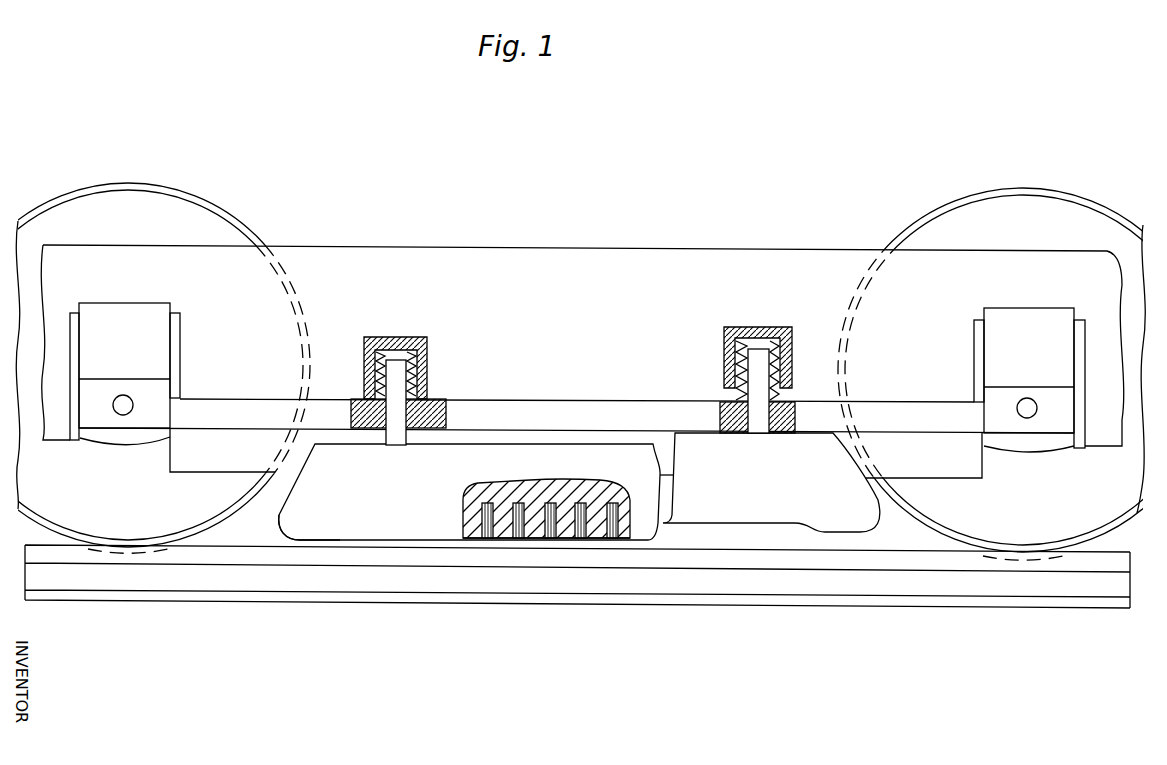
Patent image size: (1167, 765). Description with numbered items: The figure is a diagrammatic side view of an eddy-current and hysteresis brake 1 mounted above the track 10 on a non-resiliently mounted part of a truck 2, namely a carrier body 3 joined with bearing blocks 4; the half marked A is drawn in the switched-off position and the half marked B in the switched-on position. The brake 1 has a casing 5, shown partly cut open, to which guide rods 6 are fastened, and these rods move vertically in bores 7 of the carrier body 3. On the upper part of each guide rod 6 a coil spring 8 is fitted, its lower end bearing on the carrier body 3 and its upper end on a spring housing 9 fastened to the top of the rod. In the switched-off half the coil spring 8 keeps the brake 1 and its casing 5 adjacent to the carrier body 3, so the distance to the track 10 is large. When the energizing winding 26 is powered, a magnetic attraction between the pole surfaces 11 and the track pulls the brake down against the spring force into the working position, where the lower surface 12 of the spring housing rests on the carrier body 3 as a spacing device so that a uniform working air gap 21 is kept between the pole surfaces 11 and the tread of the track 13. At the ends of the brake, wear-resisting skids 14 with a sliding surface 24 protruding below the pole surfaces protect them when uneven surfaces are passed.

The eddy-current and hysteresis brake 1 is at (471, 440).
The truck 2 is at (670, 285).
The carrier body 3 is at (904, 417).
The bearing blocks 4 is at (1055, 328).
The casing 5 is at (563, 458).
The guide rods 6 is at (396, 388).
The bores 7 is at (408, 430).
The coil spring 8 is at (383, 350).
The spring housing 9 is at (372, 345).
The track 10 is at (759, 592).
The pole surfaces 11 is at (598, 547).
The lower surface of the spring box 12 is at (793, 398).
The tread of the track 13 is at (898, 540).
The wear-resisting skids 14 is at (285, 530).
The working air gap 21 is at (533, 545).
The wear-resisting sliding surface 24 is at (317, 547).
The energizing winding 26 is at (612, 543).